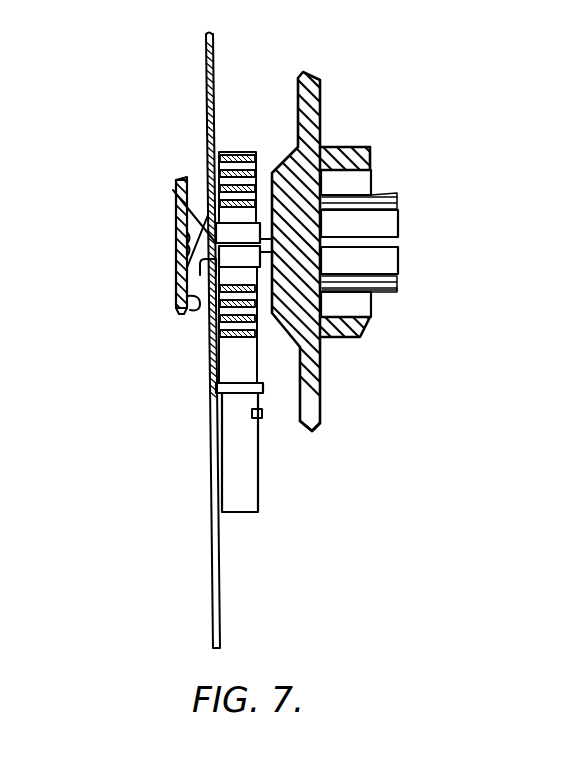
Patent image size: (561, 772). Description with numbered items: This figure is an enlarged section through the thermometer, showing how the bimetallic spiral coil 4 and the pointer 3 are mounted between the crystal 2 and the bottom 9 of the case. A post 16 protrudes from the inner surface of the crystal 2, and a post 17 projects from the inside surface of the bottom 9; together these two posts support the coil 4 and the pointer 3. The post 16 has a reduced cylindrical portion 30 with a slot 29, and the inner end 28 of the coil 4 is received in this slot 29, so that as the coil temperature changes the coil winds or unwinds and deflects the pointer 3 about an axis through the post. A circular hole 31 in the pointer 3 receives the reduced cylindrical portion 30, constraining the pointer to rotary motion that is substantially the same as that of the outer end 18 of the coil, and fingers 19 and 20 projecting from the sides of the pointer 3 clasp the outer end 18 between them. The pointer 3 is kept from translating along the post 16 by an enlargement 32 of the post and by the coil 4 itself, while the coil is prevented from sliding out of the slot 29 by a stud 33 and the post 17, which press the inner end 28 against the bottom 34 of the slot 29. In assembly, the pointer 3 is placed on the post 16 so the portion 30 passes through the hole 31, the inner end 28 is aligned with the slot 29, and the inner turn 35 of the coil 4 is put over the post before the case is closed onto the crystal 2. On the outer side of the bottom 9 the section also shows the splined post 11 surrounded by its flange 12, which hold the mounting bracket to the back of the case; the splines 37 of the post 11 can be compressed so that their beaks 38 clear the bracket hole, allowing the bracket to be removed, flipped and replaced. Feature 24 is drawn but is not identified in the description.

The crystal 2 is at (181, 316).
The pointer 3 is at (212, 388).
The bimetallic spiral coil 4 is at (265, 336).
The bottom 9 is at (313, 429).
The splined post 11 is at (408, 257).
The flange 12 is at (353, 147).
The post 16 is at (203, 249).
The post 17 is at (291, 172).
The outer end 18 is at (254, 483).
The finger 19 is at (248, 393).
The finger 20 is at (262, 416).
The plate end 24 is at (180, 300).
The inner end 28 is at (273, 345).
The slot 29 is at (197, 266).
The reduced cylindrical portion 30 is at (247, 267).
The circular hole 31 is at (213, 265).
The enlargement 32 is at (200, 203).
The stud 33 is at (245, 243).
The bottom 34 is at (188, 208).
The inner turn 35 is at (260, 207).
The splines 37 is at (362, 234).
The beaks 38 is at (372, 195).